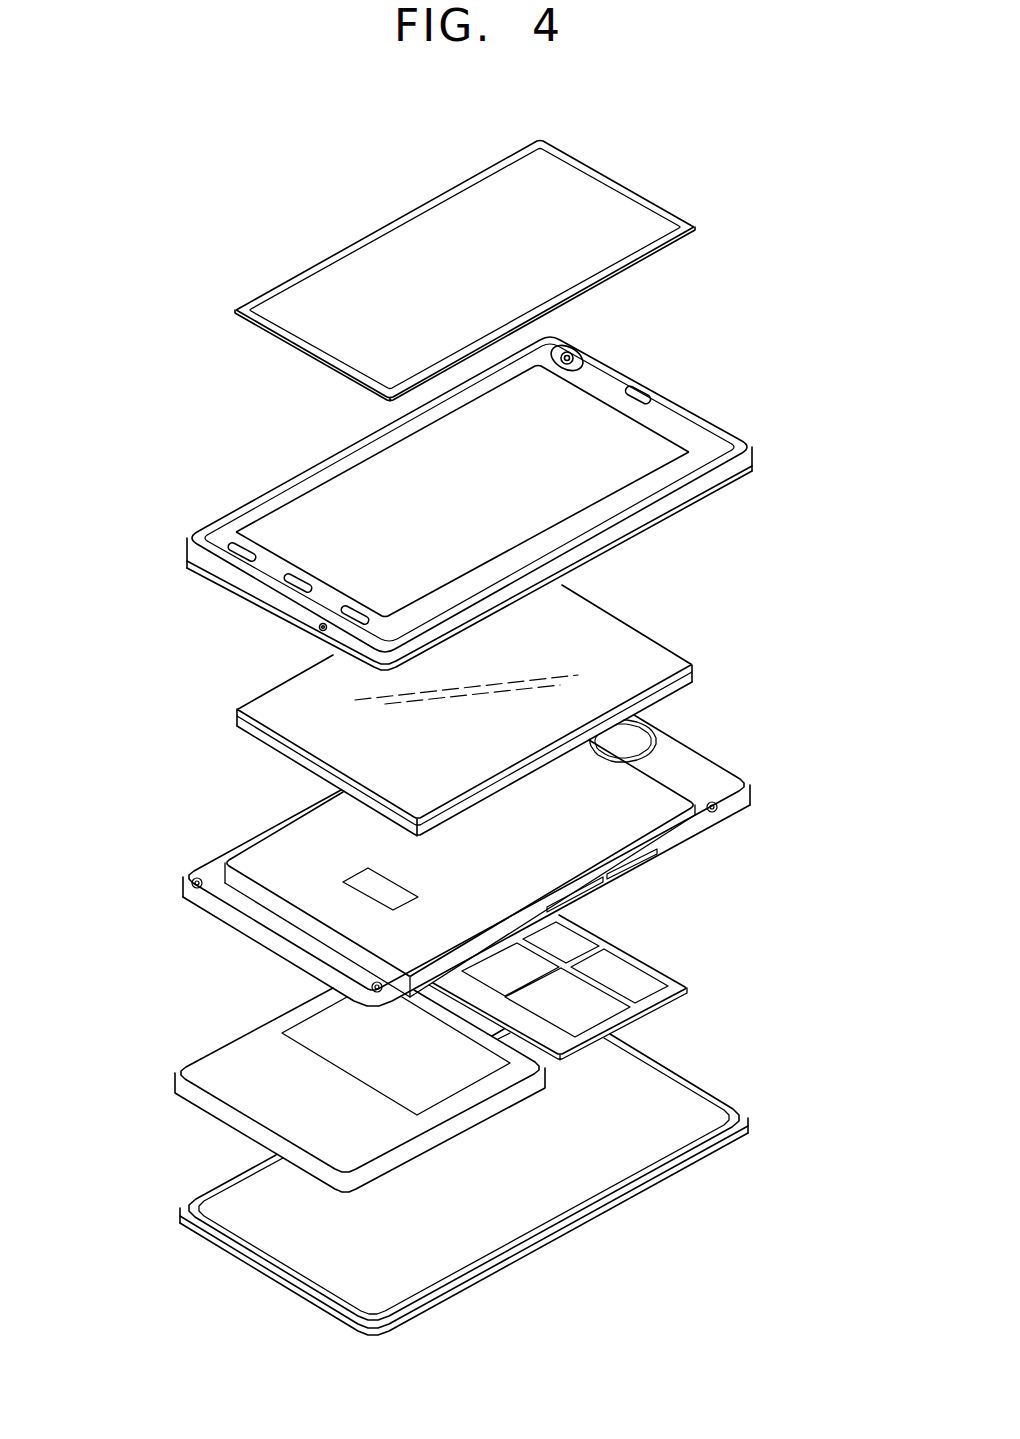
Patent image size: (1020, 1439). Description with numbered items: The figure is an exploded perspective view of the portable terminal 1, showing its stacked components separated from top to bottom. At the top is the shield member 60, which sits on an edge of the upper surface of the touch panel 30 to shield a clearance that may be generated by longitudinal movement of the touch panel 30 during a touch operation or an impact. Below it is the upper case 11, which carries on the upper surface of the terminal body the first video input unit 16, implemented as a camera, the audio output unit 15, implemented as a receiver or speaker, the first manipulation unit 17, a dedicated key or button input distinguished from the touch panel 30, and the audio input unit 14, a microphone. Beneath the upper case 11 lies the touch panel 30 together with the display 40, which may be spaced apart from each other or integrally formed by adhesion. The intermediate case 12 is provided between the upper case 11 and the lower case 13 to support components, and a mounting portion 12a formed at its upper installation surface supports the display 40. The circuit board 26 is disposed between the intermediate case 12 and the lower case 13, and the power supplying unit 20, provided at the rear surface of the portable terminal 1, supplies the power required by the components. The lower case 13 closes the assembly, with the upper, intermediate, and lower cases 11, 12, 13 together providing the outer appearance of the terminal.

The portable terminal 1 is at (132, 283).
The shield member 60 is at (307, 277).
The upper case 11 is at (748, 462).
The first video input unit 16 is at (575, 352).
The audio output unit 15 is at (645, 388).
The first manipulation unit 17 is at (212, 535).
The audio input unit 14 is at (320, 633).
The touch panel 30 is at (622, 650).
The display 40 is at (680, 677).
The intermediate case 12 is at (475, 860).
The mounting portion 12a is at (640, 818).
The circuit board 26 is at (630, 967).
The power supplying unit 20 is at (242, 1127).
The lower case 13 is at (670, 1167).